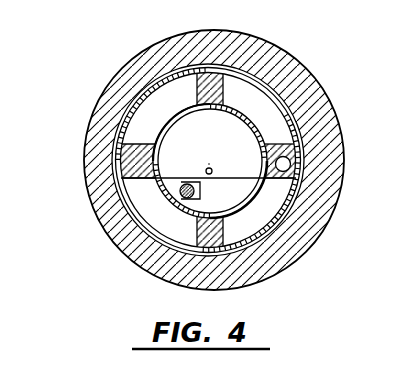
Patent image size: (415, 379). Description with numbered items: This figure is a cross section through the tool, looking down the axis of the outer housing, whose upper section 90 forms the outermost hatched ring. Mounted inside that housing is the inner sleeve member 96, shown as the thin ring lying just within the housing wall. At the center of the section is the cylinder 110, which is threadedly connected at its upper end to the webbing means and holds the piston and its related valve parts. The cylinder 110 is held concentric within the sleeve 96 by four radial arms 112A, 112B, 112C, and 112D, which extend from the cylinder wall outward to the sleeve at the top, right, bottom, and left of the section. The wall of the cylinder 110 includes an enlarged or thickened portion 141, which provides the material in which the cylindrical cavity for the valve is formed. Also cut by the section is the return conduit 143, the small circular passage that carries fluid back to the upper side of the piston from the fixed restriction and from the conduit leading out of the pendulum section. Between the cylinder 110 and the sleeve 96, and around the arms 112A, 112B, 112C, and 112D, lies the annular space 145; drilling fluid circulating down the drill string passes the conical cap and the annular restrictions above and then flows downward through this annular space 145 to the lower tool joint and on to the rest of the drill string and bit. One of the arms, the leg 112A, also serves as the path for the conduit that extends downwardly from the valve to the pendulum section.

The upper section 90 is at (262, 47).
The inner sleeve member 96 is at (266, 87).
The cylinder 110 is at (198, 108).
The radial arm 112A is at (213, 77).
The radial arm 112B is at (300, 142).
The radial arm 112C is at (215, 243).
The radial arm 112D is at (135, 155).
The thickened portion of the cylinder wall 141 is at (243, 150).
The return conduit 143 is at (289, 167).
The annular space 145 is at (182, 230).